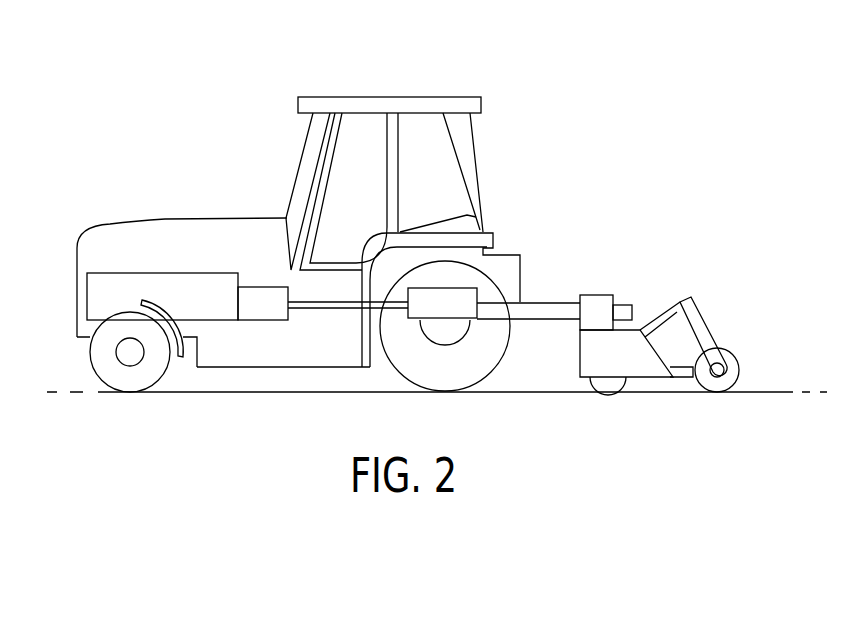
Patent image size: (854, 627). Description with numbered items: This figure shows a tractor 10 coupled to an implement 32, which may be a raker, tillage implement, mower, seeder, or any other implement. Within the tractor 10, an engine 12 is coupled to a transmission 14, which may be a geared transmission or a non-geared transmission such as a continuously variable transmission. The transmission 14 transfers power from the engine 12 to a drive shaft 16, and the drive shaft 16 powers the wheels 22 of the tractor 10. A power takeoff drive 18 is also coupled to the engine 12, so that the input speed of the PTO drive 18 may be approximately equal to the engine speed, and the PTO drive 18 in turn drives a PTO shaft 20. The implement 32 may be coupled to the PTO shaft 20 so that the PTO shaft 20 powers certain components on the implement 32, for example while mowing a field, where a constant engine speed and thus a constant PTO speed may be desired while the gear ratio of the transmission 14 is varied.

The tractor 10 is at (518, 43).
The engine 12 is at (163, 273).
The transmission 14 is at (265, 320).
The drive shaft 16 is at (350, 308).
The power takeoff drive 18 is at (480, 294).
The PTO shaft 20 is at (490, 325).
The wheels 22 is at (100, 362).
The implement 32 is at (650, 280).